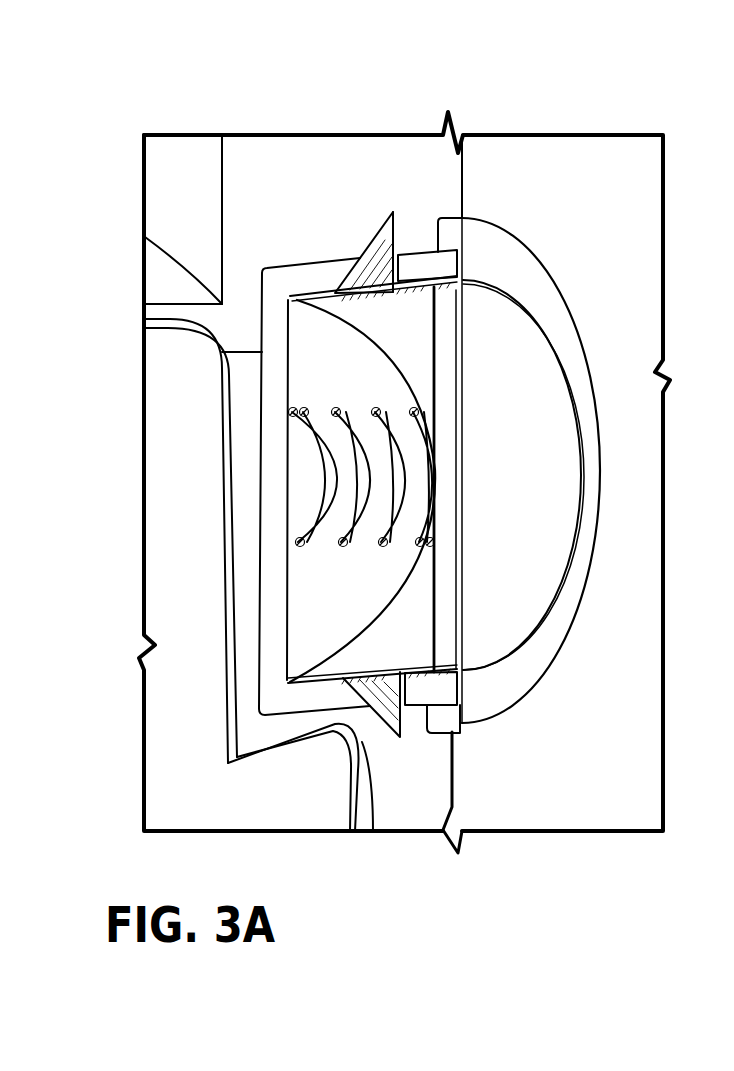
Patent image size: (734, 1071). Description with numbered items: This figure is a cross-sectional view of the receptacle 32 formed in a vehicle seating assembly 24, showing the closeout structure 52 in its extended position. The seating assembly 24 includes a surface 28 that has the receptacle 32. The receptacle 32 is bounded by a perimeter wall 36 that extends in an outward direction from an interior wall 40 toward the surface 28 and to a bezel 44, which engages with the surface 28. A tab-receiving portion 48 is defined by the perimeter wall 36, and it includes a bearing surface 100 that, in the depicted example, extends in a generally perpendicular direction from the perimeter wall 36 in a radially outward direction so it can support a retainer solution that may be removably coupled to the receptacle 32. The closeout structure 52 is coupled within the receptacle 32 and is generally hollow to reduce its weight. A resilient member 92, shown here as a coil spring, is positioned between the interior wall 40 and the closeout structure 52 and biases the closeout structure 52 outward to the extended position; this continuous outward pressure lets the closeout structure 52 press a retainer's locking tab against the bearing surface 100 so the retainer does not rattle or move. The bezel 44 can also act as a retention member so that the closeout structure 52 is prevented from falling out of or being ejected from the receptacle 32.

The vehicle seating assembly 24 is at (173, 130).
The surface 28 is at (500, 170).
The receptacle 32 is at (395, 240).
The perimeter wall 36 is at (330, 290).
The interior wall 40 is at (308, 343).
The bezel 44 is at (520, 237).
The tab-receiving portion 48 is at (373, 237).
The closeout structure 52 is at (527, 358).
The resilient member 92 is at (375, 545).
The bearing surface 100 is at (425, 252).